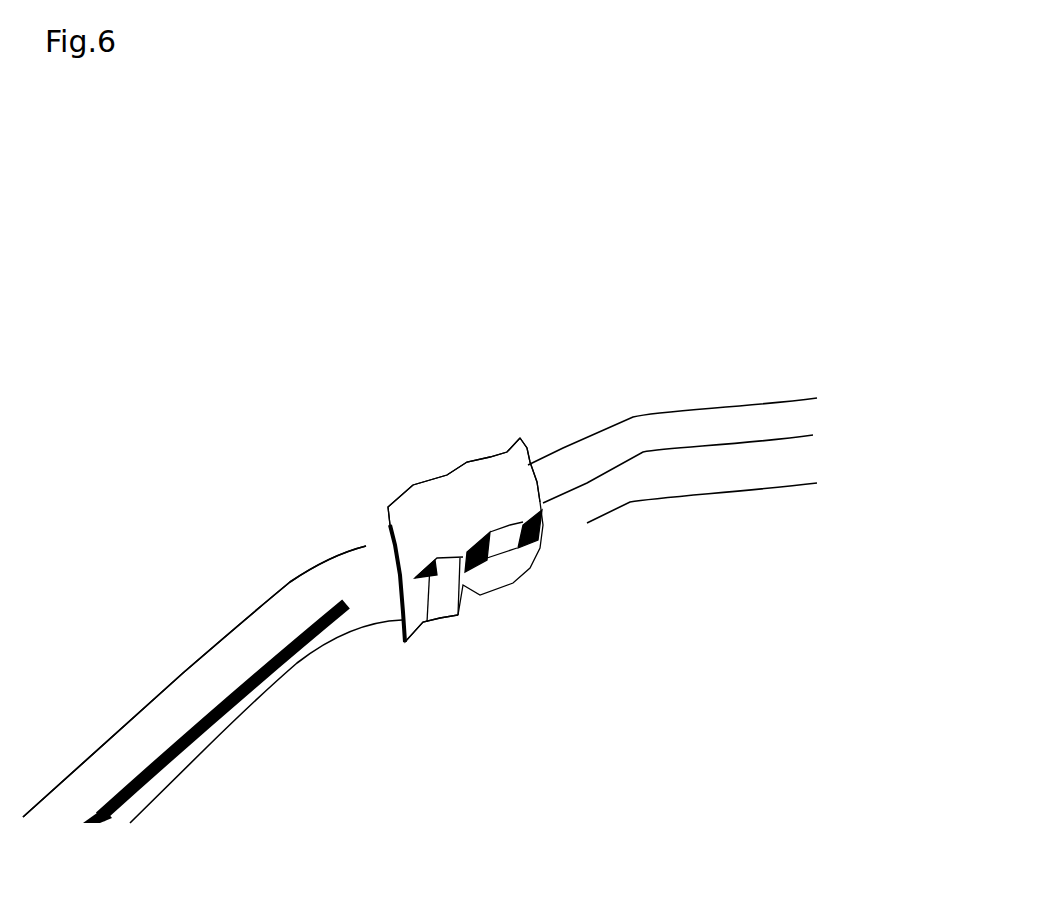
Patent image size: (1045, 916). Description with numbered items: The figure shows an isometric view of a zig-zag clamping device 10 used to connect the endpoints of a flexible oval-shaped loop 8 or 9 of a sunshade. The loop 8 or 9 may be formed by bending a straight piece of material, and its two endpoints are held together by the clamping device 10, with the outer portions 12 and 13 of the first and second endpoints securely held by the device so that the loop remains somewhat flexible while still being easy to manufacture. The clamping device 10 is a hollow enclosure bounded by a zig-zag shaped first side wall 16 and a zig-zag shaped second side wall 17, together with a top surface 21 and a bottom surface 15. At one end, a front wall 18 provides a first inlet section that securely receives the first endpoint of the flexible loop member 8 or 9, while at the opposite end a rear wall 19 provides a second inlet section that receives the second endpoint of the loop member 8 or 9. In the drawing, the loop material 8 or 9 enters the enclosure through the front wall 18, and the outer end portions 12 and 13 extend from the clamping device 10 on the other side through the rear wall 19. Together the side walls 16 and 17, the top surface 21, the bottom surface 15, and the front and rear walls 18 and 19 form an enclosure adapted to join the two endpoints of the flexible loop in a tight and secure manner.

The flexible oval-shaped loop 8 is at (212, 673).
The flexible oval-shaped loop 9 is at (183, 673).
The clamping device 10 is at (447, 423).
The outer portion of first endpoint 12 is at (603, 443).
The outer portion of second endpoint 13 is at (360, 553).
The bottom surface 15 is at (457, 617).
The zig-zag shaped first side wall 16 is at (493, 563).
The zig-zag shaped second side wall 17 is at (447, 475).
The front wall 18 is at (397, 532).
The rear wall 19 is at (527, 452).
The top surface 21 is at (503, 508).